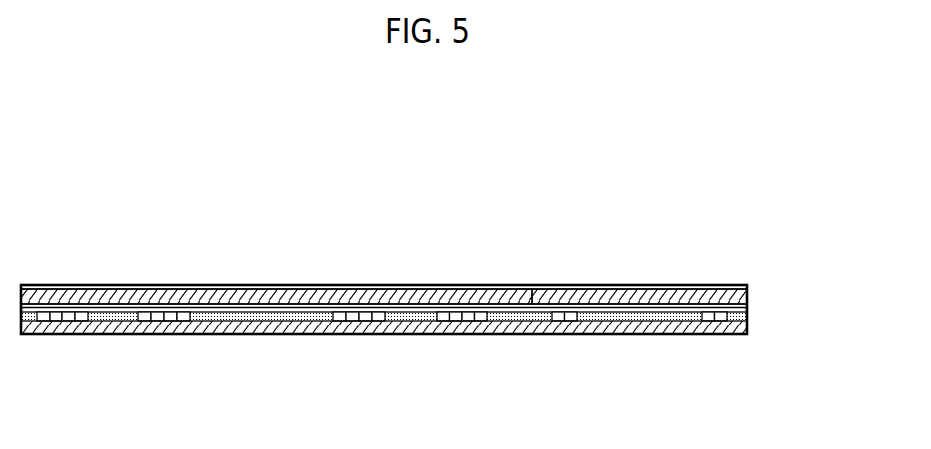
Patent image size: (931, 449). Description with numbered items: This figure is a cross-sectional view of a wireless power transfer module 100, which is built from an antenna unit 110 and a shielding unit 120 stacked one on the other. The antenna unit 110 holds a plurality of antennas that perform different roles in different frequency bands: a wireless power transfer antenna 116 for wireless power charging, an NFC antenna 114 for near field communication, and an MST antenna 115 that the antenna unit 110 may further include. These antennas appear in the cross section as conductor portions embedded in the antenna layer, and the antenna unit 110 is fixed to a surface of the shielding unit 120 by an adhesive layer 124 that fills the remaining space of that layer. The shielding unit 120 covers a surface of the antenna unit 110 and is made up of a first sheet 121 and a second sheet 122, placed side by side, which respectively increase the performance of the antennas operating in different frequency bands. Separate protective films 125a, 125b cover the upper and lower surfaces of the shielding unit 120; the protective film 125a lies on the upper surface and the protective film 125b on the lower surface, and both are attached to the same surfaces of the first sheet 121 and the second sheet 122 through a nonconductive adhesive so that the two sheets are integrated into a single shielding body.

The wireless power transfer module 100 is at (423, 164).
The antenna unit 110 is at (754, 326).
The NFC antenna 114 is at (708, 334).
The MST antenna 115 is at (68, 317).
The wireless power transfer antenna 116 is at (167, 317).
The shielding unit 120 is at (754, 296).
The first sheet 121 is at (478, 300).
The second sheet 122 is at (590, 300).
The adhesive layer 124 is at (299, 315).
The protective film 125a is at (375, 289).
The protective film 125b is at (260, 307).